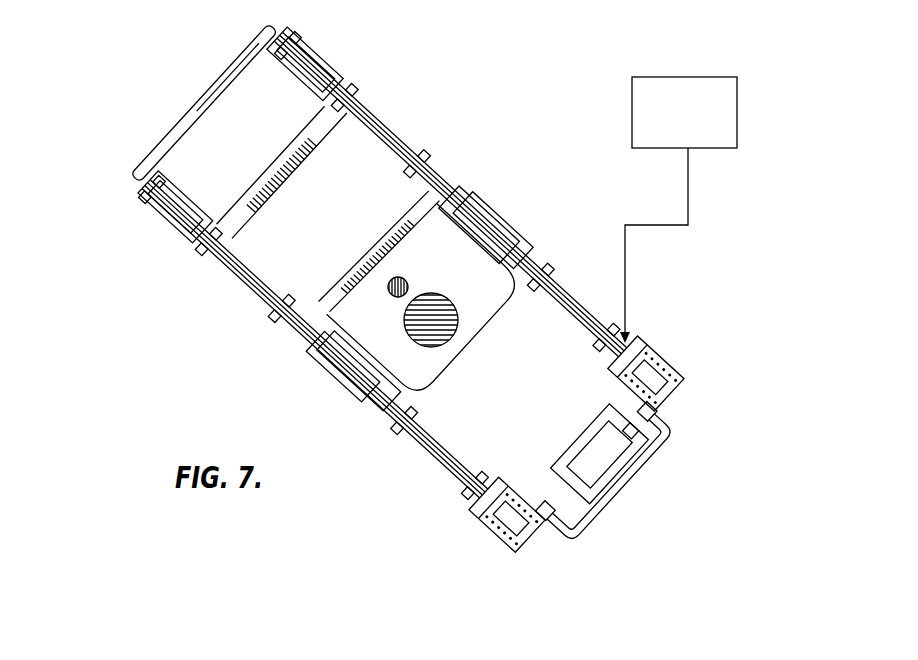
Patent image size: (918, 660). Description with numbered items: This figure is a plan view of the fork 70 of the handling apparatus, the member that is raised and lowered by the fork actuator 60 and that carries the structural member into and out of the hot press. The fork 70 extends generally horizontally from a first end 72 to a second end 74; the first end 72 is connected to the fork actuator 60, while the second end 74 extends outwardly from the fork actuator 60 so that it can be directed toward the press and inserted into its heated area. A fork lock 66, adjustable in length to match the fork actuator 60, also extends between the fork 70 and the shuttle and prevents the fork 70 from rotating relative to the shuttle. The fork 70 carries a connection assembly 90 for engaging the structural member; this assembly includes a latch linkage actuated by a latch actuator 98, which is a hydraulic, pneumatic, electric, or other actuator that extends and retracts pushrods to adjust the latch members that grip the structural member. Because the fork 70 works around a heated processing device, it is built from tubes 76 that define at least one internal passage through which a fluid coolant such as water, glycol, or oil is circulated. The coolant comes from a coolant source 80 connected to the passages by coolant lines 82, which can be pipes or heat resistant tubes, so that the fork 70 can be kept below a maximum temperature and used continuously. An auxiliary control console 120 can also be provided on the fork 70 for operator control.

The fork 70 is at (153, 83).
The first end 72 is at (150, 145).
The second end 74 is at (537, 517).
The tubes 76 is at (245, 227).
The fork actuator 60 is at (447, 296).
The fork lock 66 is at (408, 283).
The coolant source 80 is at (738, 110).
The coolant lines 82 is at (628, 297).
The connection assembly 90 is at (423, 440).
The latch actuator 98 is at (660, 395).
The auxiliary control console 120 is at (620, 470).